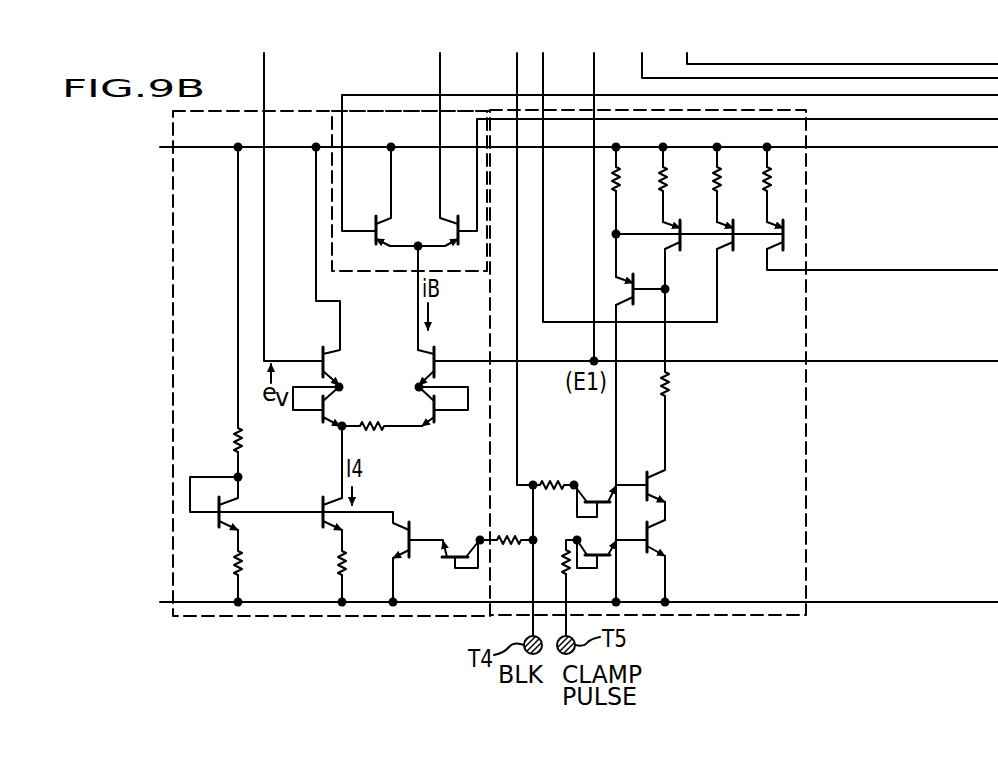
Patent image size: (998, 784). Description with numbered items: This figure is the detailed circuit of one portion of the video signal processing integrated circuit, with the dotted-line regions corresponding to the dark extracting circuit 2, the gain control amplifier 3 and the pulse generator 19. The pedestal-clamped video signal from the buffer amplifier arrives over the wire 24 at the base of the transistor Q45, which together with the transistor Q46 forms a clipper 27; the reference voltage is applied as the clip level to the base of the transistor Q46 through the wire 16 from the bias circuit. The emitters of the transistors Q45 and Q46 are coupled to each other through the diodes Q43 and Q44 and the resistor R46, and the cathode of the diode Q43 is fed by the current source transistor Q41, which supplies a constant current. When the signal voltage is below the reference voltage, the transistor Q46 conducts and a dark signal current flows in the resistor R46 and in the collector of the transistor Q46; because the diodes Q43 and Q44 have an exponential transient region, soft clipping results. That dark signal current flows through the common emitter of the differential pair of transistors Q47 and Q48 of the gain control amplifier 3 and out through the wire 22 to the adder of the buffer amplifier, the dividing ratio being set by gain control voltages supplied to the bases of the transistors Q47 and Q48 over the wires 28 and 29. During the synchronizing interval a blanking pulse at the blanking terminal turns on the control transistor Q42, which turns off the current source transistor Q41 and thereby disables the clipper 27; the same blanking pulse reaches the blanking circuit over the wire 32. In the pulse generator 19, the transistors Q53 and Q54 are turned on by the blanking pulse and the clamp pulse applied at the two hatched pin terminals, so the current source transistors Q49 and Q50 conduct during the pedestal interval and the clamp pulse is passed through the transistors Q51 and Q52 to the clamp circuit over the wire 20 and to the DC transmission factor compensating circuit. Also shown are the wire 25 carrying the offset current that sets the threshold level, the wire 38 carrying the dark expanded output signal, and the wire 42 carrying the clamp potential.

The dark extracting circuit 2 is at (338, 617).
The gain control amplifier 3 is at (392, 108).
The wire 16 is at (767, 361).
The pulse generator 19 is at (697, 615).
The wire 20 is at (543, 76).
The wire 22 is at (440, 76).
The wire 24 is at (264, 76).
The wire 25 is at (642, 76).
The clipper 27 is at (374, 367).
The wire 28 is at (890, 95).
The wire 29 is at (960, 119).
The wire 32 is at (517, 76).
The wire 38 is at (687, 66).
The wire 42 is at (962, 270).
The current source transistor Q41 is at (322, 500).
The control transistor Q42 is at (418, 509).
The diode Q43 is at (322, 422).
The diode Q44 is at (435, 422).
The transistor Q45 is at (322, 349).
The transistor Q46 is at (452, 337).
The transistor Q47 is at (372, 219).
The transistor Q48 is at (453, 221).
The current source transistor Q49 is at (641, 269).
The current source transistor Q50 is at (681, 252).
The transistor Q51 is at (733, 252).
The transistor Q52 is at (783, 252).
The transistor Q53 is at (665, 475).
The transistor Q54 is at (665, 530).
The resistor R46 is at (386, 430).